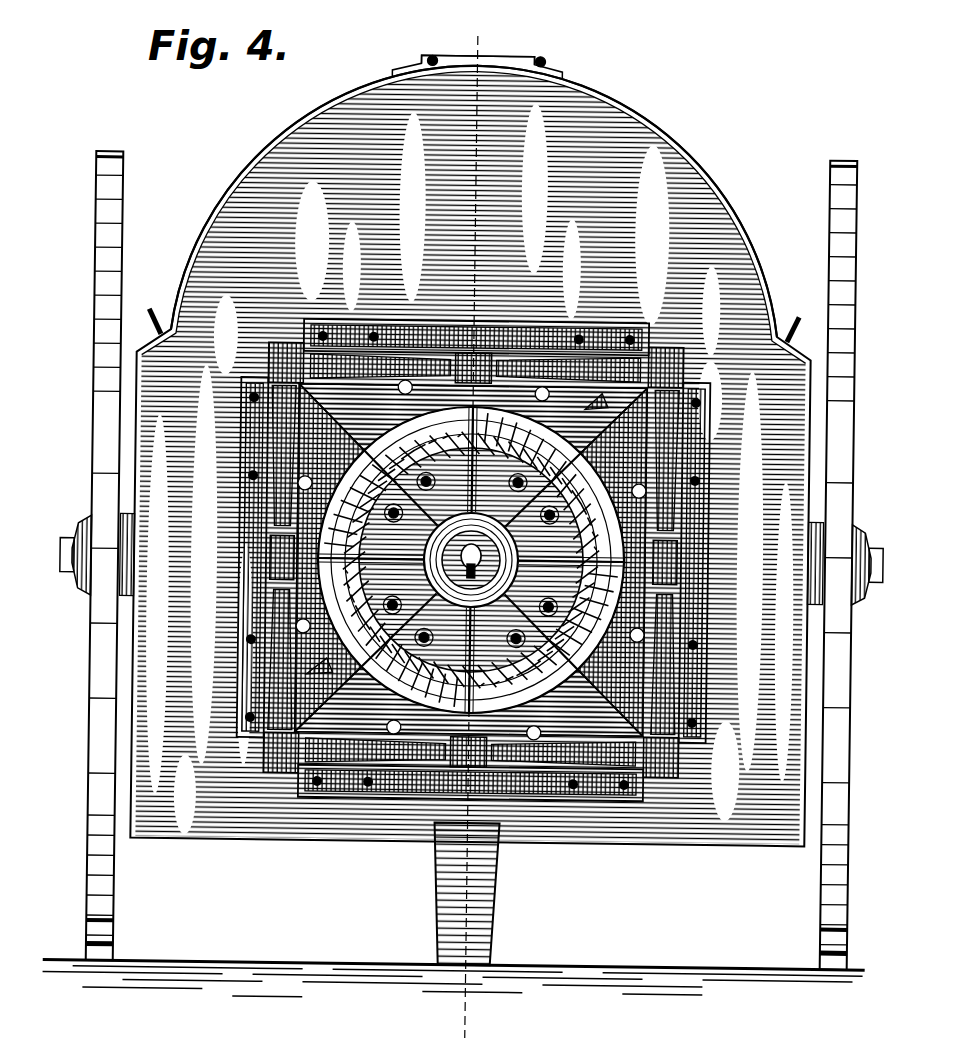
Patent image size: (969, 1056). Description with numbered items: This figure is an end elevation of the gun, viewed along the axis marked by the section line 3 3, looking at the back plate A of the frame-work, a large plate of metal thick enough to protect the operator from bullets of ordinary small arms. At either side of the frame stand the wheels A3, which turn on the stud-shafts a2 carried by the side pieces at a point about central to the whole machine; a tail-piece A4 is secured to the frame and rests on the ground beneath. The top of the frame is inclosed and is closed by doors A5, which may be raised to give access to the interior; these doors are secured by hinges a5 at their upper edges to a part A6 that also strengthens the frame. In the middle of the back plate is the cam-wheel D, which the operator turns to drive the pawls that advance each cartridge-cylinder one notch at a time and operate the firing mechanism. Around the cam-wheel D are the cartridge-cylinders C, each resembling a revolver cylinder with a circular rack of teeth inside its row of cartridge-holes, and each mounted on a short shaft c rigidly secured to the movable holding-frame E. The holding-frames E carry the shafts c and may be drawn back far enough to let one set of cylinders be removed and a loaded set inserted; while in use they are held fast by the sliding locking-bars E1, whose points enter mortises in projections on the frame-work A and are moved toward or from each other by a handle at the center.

The section line 3 3 is at (470, 534).
The back plate of the frame-work A is at (712, 858).
The wheels A3 is at (102, 185).
The tail-piece A4 is at (488, 905).
The doors A5 is at (720, 160).
The frame part A6 is at (485, 50).
The stud-shafts a2 is at (56, 540).
The hinges a5 is at (553, 42).
The cartridge-cylinders C is at (471, 560).
The short shaft c is at (390, 384).
The cam-wheel D is at (471, 560).
The movable holding-frames E is at (460, 345).
The sliding locking-bars E1 is at (451, 538).